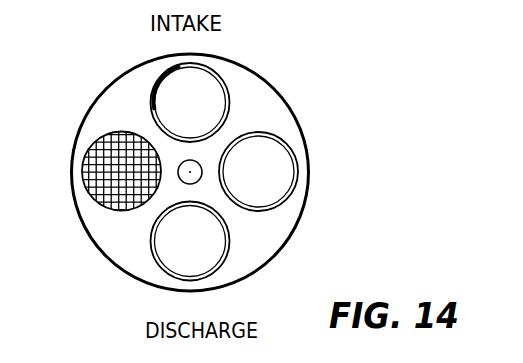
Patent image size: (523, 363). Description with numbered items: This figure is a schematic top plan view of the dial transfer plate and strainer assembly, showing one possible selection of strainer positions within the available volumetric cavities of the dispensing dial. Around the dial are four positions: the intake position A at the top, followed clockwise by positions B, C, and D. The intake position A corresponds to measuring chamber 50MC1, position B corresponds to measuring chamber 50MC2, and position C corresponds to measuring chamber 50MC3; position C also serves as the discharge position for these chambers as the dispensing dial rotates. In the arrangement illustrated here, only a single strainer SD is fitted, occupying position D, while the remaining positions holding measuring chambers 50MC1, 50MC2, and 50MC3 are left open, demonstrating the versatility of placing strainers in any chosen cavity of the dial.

The measuring chamber 50MC1 is at (206, 93).
The measuring chamber 50MC2 is at (265, 185).
The measuring chamber 50MC3 is at (175, 238).
The strainer SD is at (107, 152).
The intake position A is at (190, 43).
The position B is at (320, 170).
The discharge position C is at (192, 306).
The position D is at (62, 173).